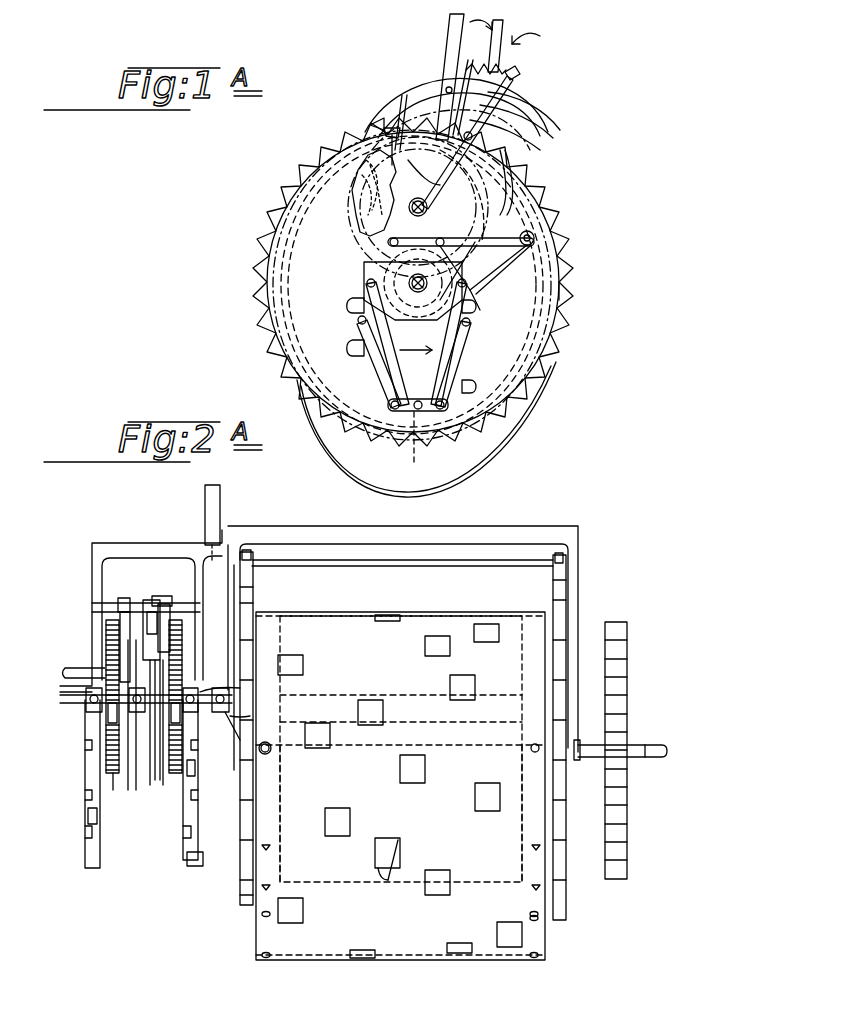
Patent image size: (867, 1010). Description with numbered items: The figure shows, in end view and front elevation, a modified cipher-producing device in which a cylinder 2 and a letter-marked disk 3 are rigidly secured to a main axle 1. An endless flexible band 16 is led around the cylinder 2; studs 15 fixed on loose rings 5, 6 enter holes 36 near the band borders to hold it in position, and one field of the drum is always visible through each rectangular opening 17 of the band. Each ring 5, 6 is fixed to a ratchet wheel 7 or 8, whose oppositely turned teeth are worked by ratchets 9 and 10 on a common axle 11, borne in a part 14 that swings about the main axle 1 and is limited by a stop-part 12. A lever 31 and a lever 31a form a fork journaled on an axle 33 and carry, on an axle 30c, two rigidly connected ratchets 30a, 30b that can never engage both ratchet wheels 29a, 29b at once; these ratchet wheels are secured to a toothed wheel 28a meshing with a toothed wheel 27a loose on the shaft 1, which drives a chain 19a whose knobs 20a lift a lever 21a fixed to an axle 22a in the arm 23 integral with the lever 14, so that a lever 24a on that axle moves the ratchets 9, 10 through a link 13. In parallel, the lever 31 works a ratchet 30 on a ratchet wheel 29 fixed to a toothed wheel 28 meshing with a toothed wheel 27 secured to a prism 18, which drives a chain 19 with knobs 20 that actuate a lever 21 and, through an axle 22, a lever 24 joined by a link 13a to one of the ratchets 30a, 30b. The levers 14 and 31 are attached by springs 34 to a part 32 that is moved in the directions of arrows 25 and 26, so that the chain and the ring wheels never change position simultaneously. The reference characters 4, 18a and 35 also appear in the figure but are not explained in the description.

In FIG. 1A, the main axle 1 is at (410, 280).
In FIG. 2A, the main axle 1 is at (660, 757).
In FIG. 1A, the cylinder 2 is at (298, 268).
In FIG. 2A, the cylinder 2 is at (412, 625).
In FIG. 2A, the disk 3 is at (628, 670).
In FIG. 2A, the plate line 4 is at (315, 700).
In FIG. 1A, the loose ring 5 is at (285, 222).
In FIG. 2A, the loose ring 5 is at (282, 810).
In FIG. 1A, the loose ring 6 is at (412, 285).
In FIG. 2A, the loose ring 6 is at (520, 828).
In FIG. 1A, the ratchet wheel 7 is at (258, 288).
In FIG. 2A, the ratchet wheel 7 is at (240, 898).
In FIG. 1A, the ratchet wheel 8 is at (570, 292).
In FIG. 1A, the ratchet 9 is at (374, 128).
In FIG. 2A, the ratchet 9 is at (254, 580).
In FIG. 1A, the ratchet 10 is at (522, 110).
In FIG. 2A, the ratchet 10 is at (551, 578).
In FIG. 1A, the common axle 11 is at (444, 98).
In FIG. 2A, the common axle 11 is at (402, 577).
In FIG. 1A, the stop-part 12 is at (525, 132).
In FIG. 1A, the link 13 is at (400, 145).
In FIG. 2A, the link 13 is at (268, 636).
In FIG. 1A, the link 13a is at (423, 171).
In FIG. 2A, the link 13a is at (120, 612).
In FIG. 1A, the part (lever) 14 is at (462, 62).
In FIG. 2A, the part (lever) 14 is at (495, 540).
In FIG. 1A, the studs 15 is at (414, 447).
In FIG. 2A, the studs 15 is at (268, 612).
In FIG. 1A, the endless flexible band 16 is at (500, 458).
In FIG. 2A, the endless flexible band 16 is at (400, 786).
In FIG. 2A, the rectangular openings 17 is at (452, 692).
In FIG. 1A, the prism 18 is at (388, 298).
In FIG. 2A, the prism 18 is at (85, 770).
In FIG. 2A, the bar 18a is at (198, 772).
In FIG. 1A, the link chain 19 is at (382, 338).
In FIG. 2A, the link chain 19 is at (85, 834).
In FIG. 1A, the chain 19a is at (462, 340).
In FIG. 2A, the chain 19a is at (198, 832).
In FIG. 1A, the protruding knobs 20 is at (360, 312).
In FIG. 2A, the protruding knobs 20 is at (88, 812).
In FIG. 1A, the protruding knobs 20a is at (362, 350).
In FIG. 2A, the protruding knobs 20a is at (203, 860).
In FIG. 1A, the lever 21 is at (533, 212).
In FIG. 2A, the lever 21 is at (65, 682).
In FIG. 2A, the lever 21a is at (240, 690).
In FIG. 1A, the axle 22 is at (535, 238).
In FIG. 2A, the axle 22 is at (134, 703).
In FIG. 2A, the axle 22a is at (221, 728).
In FIG. 1A, the arm 23 is at (505, 295).
In FIG. 2A, the arm 23 is at (264, 755).
In FIG. 1A, the lever 24 is at (455, 268).
In FIG. 2A, the lever 24 is at (136, 745).
In FIG. 1A, the lever 24a is at (385, 240).
In FIG. 2A, the lever 24a is at (244, 718).
In FIG. 1A, the arrow 25 is at (468, 25).
In FIG. 1A, the arrow 26 is at (532, 42).
In FIG. 1A, the toothed wheel 27 is at (468, 288).
In FIG. 2A, the toothed wheel 27 is at (113, 790).
In FIG. 2A, the toothed wheel 27a is at (198, 790).
In FIG. 1A, the toothed wheel 28 is at (472, 250).
In FIG. 2A, the toothed wheel 28 is at (106, 634).
In FIG. 2A, the toothed wheel 28a is at (182, 648).
In FIG. 1A, the ratchet wheel 29 is at (366, 152).
In FIG. 2A, the ratchet wheel 29 is at (150, 760).
In FIG. 1A, the ratchet wheel 29a is at (362, 165).
In FIG. 2A, the ratchet wheel 29a is at (162, 780).
In FIG. 1A, the ratchet wheel 29b is at (362, 180).
In FIG. 2A, the ratchet wheel 29b is at (157, 780).
In FIG. 1A, the ratchet 30 is at (431, 207).
In FIG. 2A, the ratchet 30 is at (122, 598).
In FIG. 1A, the ratchet 30a is at (505, 165).
In FIG. 2A, the ratchet 30a is at (165, 600).
In FIG. 1A, the ratchet 30b is at (425, 130).
In FIG. 2A, the ratchet 30b is at (150, 600).
In FIG. 1A, the axle 30c is at (473, 138).
In FIG. 2A, the axle 30c is at (125, 598).
In FIG. 1A, the lever 31 is at (512, 82).
In FIG. 2A, the lever 31 is at (120, 560).
In FIG. 2A, the lever 31a is at (205, 560).
In FIG. 1A, the part 32 is at (505, 40).
In FIG. 2A, the part 32 is at (220, 502).
In FIG. 1A, the axle 33 is at (428, 210).
In FIG. 2A, the axle 33 is at (70, 668).
In FIG. 1A, the springs 34 is at (505, 72).
In FIG. 1A, the direction arrow 35 is at (417, 362).
In FIG. 2A, the holes 36 is at (538, 920).